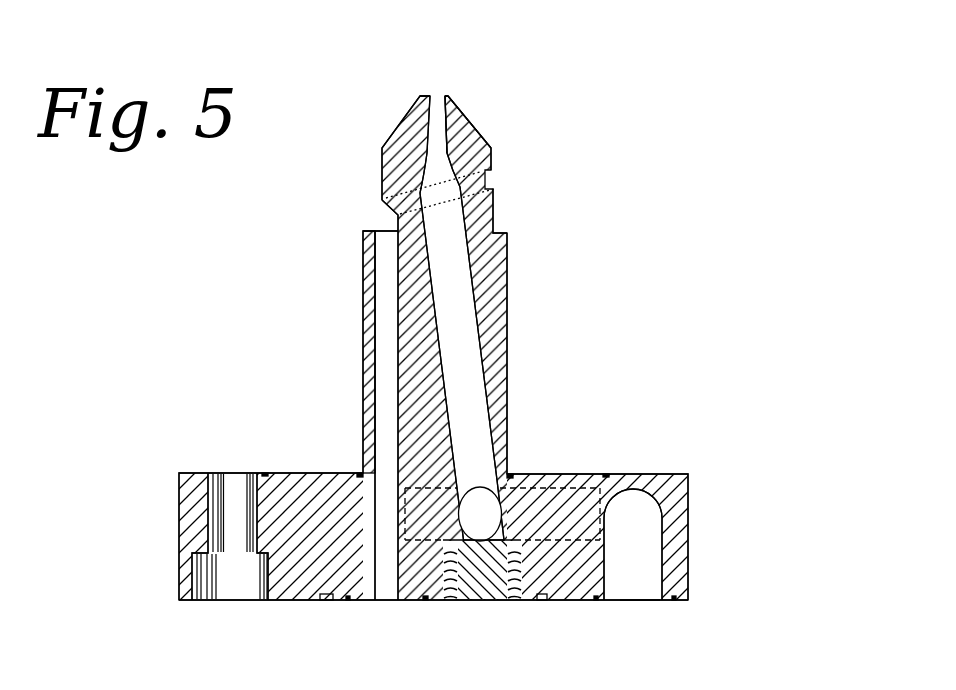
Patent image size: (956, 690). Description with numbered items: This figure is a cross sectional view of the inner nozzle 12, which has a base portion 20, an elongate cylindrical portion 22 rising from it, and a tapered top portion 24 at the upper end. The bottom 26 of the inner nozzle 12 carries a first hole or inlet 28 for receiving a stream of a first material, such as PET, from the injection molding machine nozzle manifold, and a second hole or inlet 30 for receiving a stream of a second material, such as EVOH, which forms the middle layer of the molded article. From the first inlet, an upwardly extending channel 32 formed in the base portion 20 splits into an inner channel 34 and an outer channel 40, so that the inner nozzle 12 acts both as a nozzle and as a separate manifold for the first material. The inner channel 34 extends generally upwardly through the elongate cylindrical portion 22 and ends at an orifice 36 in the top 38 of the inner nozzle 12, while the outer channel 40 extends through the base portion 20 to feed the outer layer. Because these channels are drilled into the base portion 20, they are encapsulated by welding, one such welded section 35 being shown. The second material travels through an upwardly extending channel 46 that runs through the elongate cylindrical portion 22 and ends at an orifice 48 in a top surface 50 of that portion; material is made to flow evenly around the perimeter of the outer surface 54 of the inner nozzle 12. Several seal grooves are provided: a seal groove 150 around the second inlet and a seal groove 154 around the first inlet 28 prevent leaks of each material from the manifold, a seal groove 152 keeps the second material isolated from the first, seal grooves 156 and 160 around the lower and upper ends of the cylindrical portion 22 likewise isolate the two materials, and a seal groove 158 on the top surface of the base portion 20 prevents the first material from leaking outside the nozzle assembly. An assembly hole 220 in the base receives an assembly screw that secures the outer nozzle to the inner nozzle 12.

The inner nozzle 12 is at (508, 278).
The base portion 20 is at (308, 486).
The elongate cylindrical portion 22 is at (497, 373).
The tapered top portion 24 is at (402, 130).
The bottom 26 is at (286, 600).
The first hole or inlet 28 is at (637, 600).
The second hole or inlet 30 is at (385, 600).
The upwardly extending channel 32 is at (643, 533).
The inner channel 34 is at (460, 322).
The welded section 35 is at (467, 582).
The orifice 36 is at (435, 96).
The top 38 is at (449, 95).
The outer channel 40 is at (570, 488).
The upwardly extending channel 46 is at (382, 380).
The orifice 48 is at (381, 231).
The top surface 50 is at (370, 231).
The outer surface 54 is at (481, 128).
The seal groove 150 is at (350, 600).
The seal groove 152 is at (322, 600).
The seal groove 154 is at (596, 600).
The seal groove 156 is at (358, 473).
The seal groove 158 is at (263, 472).
The seal groove 160 is at (363, 238).
The assembly hole 220 is at (217, 508).